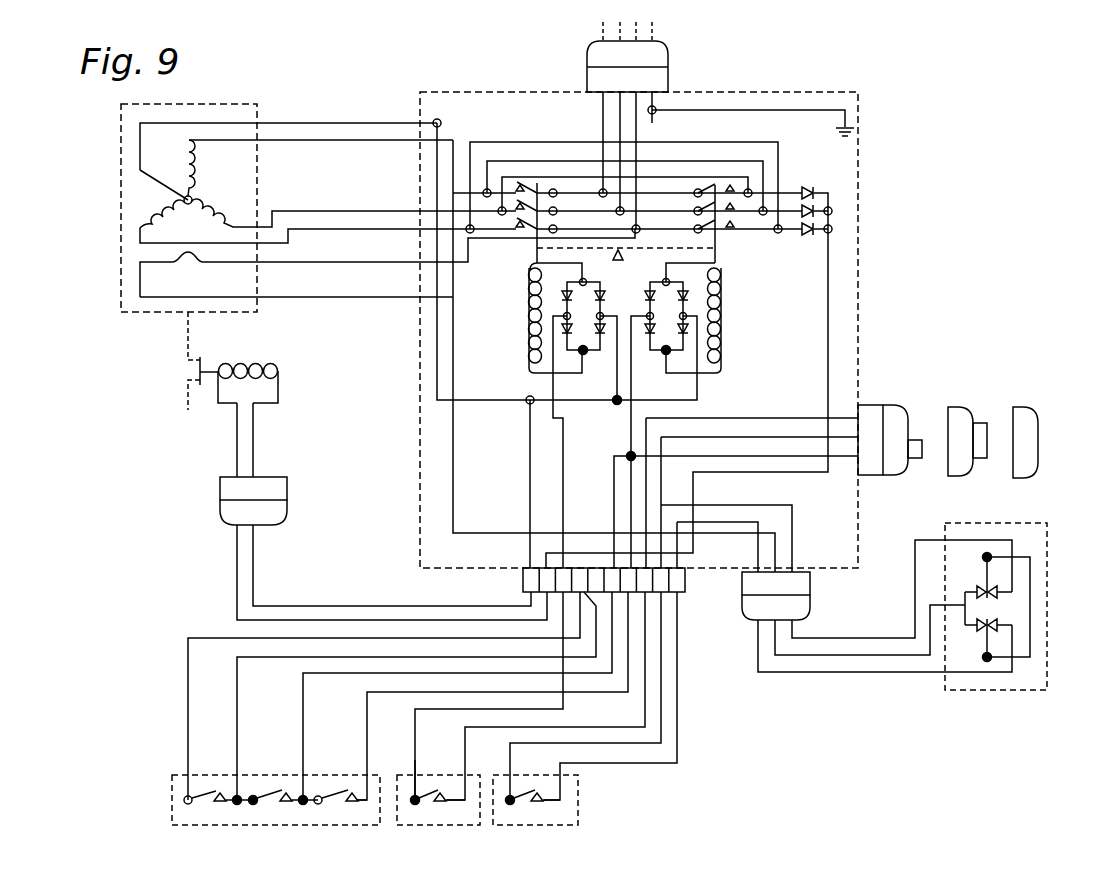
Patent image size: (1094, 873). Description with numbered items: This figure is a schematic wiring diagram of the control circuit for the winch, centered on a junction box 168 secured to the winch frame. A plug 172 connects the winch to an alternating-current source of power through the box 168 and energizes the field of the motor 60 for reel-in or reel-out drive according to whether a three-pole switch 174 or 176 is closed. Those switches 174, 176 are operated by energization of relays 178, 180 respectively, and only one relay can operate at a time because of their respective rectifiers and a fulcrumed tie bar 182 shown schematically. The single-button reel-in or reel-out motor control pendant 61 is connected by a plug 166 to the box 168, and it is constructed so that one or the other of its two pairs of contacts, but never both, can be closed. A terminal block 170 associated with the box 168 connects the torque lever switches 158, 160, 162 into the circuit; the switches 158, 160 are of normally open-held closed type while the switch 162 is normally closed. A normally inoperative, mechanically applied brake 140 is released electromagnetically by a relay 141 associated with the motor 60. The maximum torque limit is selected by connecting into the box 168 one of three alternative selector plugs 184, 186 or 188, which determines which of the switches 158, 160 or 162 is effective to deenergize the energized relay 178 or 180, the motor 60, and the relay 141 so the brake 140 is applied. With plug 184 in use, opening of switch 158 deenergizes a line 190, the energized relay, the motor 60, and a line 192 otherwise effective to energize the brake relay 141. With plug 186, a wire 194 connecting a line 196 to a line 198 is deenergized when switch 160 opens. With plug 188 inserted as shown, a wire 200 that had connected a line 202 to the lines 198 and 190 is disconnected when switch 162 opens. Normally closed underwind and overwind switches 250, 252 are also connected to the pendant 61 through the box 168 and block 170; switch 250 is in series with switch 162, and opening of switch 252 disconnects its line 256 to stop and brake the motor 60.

The motor 60 is at (121, 195).
The motor control pendant 61 is at (1048, 603).
The brake 140 is at (201, 357).
The relay 141 is at (278, 364).
The switch 158 is at (326, 792).
The switch 160 is at (268, 792).
The switch 162 is at (200, 792).
The plug 166 is at (810, 603).
The junction box 168 is at (860, 290).
The terminal block 170 is at (683, 582).
The plug 172 is at (668, 54).
The 3-pole switch 174 is at (529, 264).
The 3-pole switch 176 is at (720, 259).
The relay 178 is at (530, 310).
The relay 180 is at (720, 343).
The fulcrumed tie bar 182 is at (653, 253).
The selector plug 184 is at (1035, 410).
The selector plug 186 is at (965, 408).
The selector plug 188 is at (895, 408).
The line 190 is at (631, 427).
The line 192 is at (828, 362).
The wire 194 is at (979, 460).
The line 196 is at (734, 418).
The line 198 is at (738, 465).
The wire 200 is at (917, 440).
The line 202 is at (756, 438).
The switch 250 is at (523, 793).
The switch 252 is at (428, 792).
The line 256 is at (413, 770).